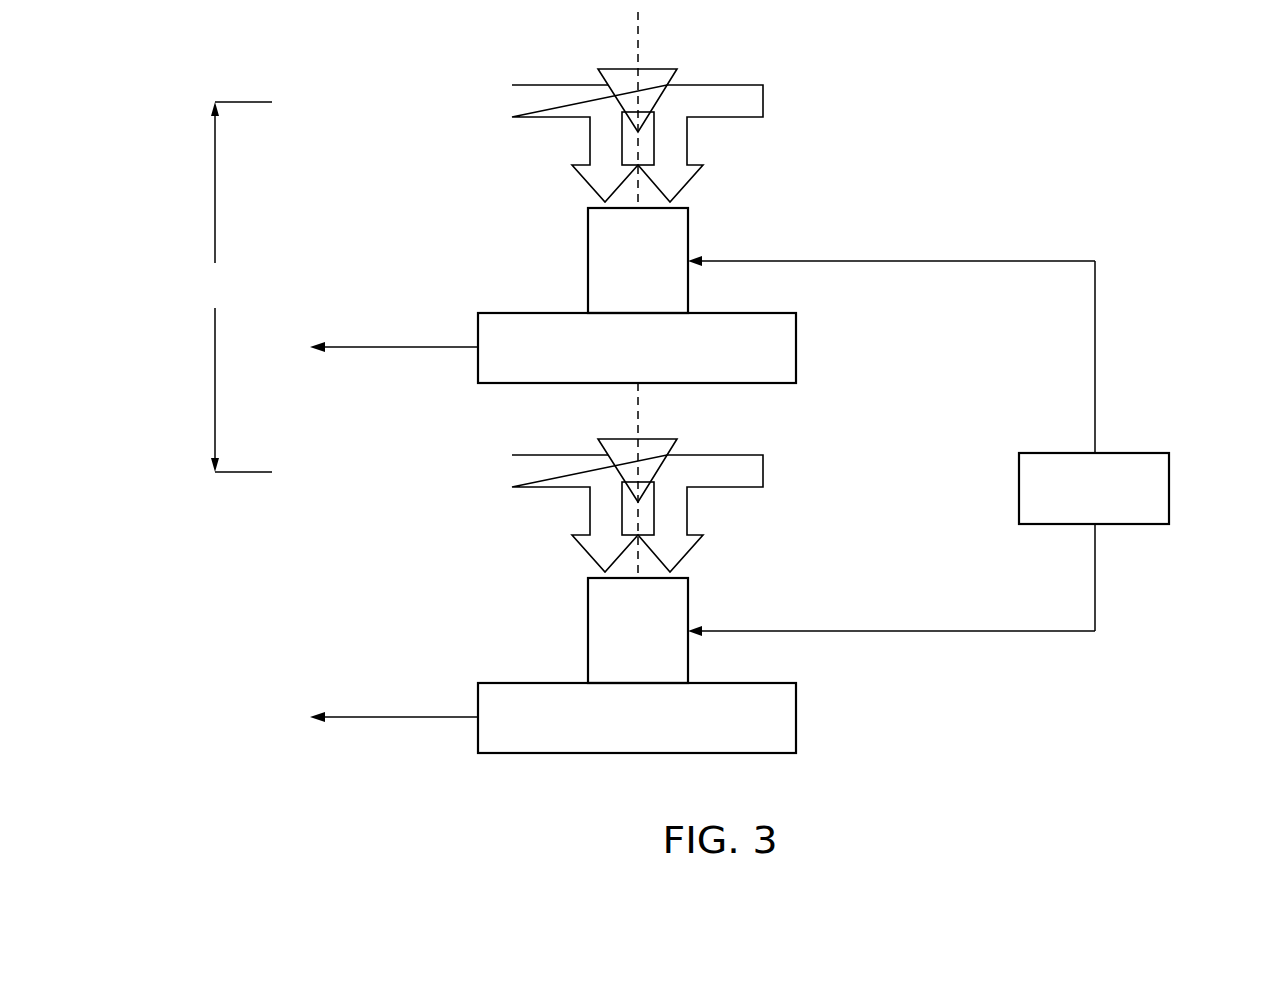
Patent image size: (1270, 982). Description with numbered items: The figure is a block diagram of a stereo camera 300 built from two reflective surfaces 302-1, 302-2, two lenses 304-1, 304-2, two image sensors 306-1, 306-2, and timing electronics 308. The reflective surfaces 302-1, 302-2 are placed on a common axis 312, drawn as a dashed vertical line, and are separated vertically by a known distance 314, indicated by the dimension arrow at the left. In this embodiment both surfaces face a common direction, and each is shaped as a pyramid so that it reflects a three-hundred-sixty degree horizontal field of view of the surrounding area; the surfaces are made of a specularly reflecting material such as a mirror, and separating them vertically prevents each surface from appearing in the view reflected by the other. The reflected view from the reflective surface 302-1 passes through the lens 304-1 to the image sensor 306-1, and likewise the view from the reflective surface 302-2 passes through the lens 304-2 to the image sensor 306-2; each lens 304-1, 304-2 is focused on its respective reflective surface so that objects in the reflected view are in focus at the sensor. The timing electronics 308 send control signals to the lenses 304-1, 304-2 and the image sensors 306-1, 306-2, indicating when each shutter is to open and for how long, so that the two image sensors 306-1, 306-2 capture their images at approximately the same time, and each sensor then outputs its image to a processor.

The stereo camera 300 is at (1078, 140).
The reflective surface 302-1 is at (600, 70).
The reflective surface 302-2 is at (600, 441).
The lens 304-1 is at (688, 228).
The lens 304-2 is at (688, 598).
The image sensor 306-1 is at (796, 347).
The image sensor 306-2 is at (796, 717).
The timing electronics 308 is at (1169, 482).
The axis 312 is at (639, 42).
The distance 314 is at (233, 287).